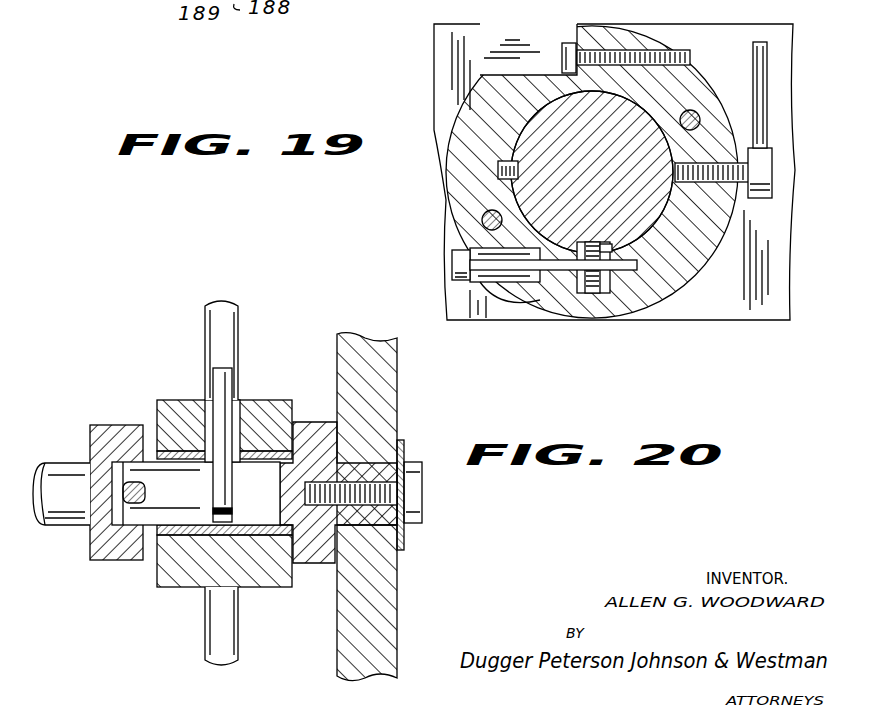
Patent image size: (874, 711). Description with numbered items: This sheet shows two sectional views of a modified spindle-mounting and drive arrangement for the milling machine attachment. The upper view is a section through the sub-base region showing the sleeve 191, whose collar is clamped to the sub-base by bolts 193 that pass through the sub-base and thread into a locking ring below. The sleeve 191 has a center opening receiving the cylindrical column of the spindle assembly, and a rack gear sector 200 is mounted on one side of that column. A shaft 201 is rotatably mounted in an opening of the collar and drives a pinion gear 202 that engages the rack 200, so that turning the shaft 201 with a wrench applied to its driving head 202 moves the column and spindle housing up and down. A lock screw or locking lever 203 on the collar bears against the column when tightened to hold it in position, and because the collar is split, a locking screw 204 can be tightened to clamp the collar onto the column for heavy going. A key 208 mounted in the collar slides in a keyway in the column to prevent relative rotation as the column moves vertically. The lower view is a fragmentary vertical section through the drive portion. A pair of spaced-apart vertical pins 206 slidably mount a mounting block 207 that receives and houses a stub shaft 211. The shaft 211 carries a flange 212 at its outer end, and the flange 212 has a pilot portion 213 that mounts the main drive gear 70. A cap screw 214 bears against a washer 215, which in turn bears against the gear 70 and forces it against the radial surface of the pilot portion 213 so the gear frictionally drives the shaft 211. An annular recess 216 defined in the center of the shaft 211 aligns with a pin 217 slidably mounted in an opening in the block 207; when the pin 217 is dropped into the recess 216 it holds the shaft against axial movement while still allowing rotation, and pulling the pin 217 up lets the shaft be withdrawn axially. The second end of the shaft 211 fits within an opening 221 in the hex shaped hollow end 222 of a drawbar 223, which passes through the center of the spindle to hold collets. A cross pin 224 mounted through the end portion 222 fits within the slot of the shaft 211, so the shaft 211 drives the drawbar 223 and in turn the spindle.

In FIG. 19, the main drive gear 70 is at (614, 172).
In FIG. 20, the main drive gear 70 is at (382, 386).
In FIG. 19, the sleeve 191 is at (440, 108).
In FIG. 19, the bolts 193 is at (698, 112).
In FIG. 19, the rack gear sector 200 is at (612, 250).
In FIG. 19, the shaft 201 is at (524, 284).
In FIG. 19, the pinion gear 202 is at (455, 264).
In FIG. 19, the locking lever 203 is at (762, 200).
In FIG. 19, the locking screw 204 is at (650, 40).
In FIG. 19, the key 208 is at (498, 168).
In FIG. 20, the vertical pins 206 is at (242, 310).
In FIG. 20, the mounting block 207 is at (182, 585).
In FIG. 20, the stub shaft 211 is at (150, 462).
In FIG. 20, the flange 212 is at (312, 420).
In FIG. 20, the pilot portion 213 is at (368, 528).
In FIG. 20, the cap screw 214 is at (425, 490).
In FIG. 20, the washer 215 is at (403, 552).
In FIG. 20, the annular recess 216 is at (245, 545).
In FIG. 20, the pin 217 is at (218, 378).
In FIG. 20, the opening 221 is at (126, 492).
In FIG. 20, the hex shaped hollow end 222 is at (115, 548).
In FIG. 20, the drawbar 223 is at (70, 518).
In FIG. 20, the cross pin 224 is at (92, 487).